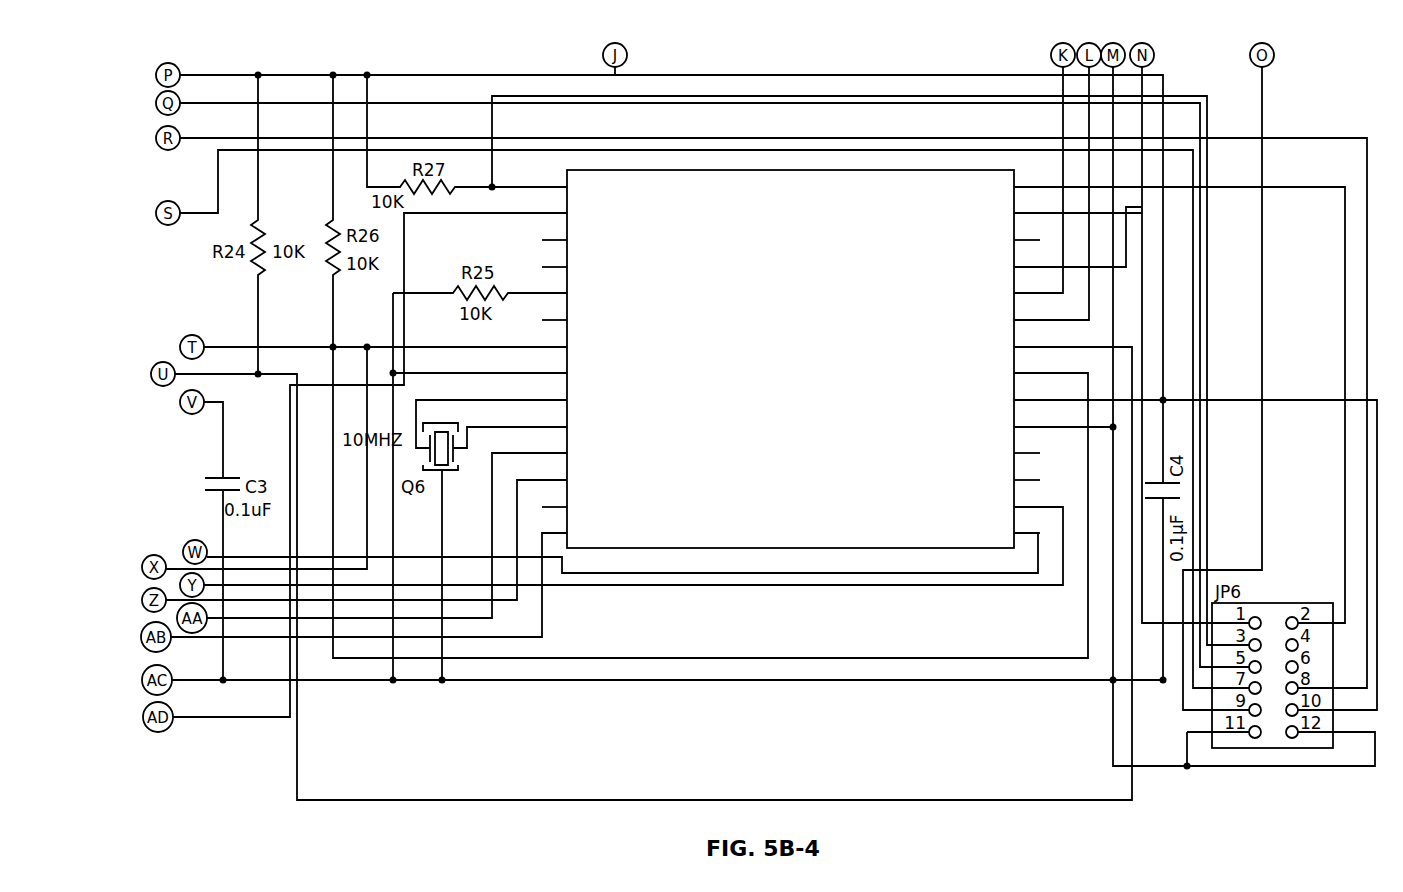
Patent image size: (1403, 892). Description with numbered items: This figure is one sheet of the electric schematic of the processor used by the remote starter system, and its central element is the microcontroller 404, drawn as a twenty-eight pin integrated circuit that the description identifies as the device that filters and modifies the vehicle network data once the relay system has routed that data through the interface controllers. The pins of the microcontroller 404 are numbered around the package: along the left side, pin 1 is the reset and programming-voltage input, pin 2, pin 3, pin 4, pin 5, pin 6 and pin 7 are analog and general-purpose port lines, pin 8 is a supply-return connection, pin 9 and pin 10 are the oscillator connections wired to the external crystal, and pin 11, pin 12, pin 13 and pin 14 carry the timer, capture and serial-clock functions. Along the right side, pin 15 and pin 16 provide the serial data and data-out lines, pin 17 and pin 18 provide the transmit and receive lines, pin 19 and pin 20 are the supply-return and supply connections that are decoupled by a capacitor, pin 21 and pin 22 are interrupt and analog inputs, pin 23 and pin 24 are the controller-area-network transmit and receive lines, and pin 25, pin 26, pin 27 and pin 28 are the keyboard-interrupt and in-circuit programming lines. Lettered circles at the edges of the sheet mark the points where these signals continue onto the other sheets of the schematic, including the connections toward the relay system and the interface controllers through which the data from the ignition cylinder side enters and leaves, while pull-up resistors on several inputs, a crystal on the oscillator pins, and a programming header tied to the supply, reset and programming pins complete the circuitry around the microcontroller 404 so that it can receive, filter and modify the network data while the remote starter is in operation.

The microcontroller 404 is at (790, 343).
The U12 pin 1 RE3/MCLR/VPP 1 is at (554, 178).
The U12 pin 2 RA0/AN0 2 is at (554, 204).
The U12 pin 3 RA1/AN1 3 is at (554, 231).
The U12 pin 4 RA2/AN2/VREF- 4 is at (554, 258).
The U12 pin 5 RA3/AN3/VREF+ 5 is at (554, 284).
The U12 pin 6 RA4/T0CKI 6 is at (554, 311).
The U12 pin 7 RA5/AN4/SS/HLVDIN 7 is at (554, 338).
The U12 pin 8 VSS 8 is at (554, 364).
The U12 pin 9 RA7/CLKI/OSC1 9 is at (554, 391).
The U12 pin 10 RA6/CLKO/OSC2 10 is at (553, 418).
The U12 pin 11 RC0/T1OSO/T13CKI 11 is at (553, 444).
The U12 pin 12 RC1/T1OSI 12 is at (553, 471).
The U12 pin 13 RC2/CCP1 13 is at (553, 498).
The U12 pin 14 RC3/SCK/SCL 14 is at (553, 524).
The U12 pin 15 RC4/SDI/SDA 15 is at (1027, 524).
The U12 pin 16 RC5/SDO 16 is at (1027, 498).
The U12 pin 17 RC6/TX/CK 17 is at (1027, 471).
The U12 pin 18 RC7/RX/DT 18 is at (1027, 444).
The U12 pin 19 VSS 19 is at (1027, 418).
The U12 pin 20 VDD 20 is at (1027, 391).
The U12 pin 21 INT0/AN10/RB0 21 is at (1027, 364).
The U12 pin 22 INT1/AN8/RB1 22 is at (1027, 338).
The U12 pin 23 INT2/CANTX/RB2 23 is at (1027, 311).
The U12 pin 24 CANRX/RB3 24 is at (1027, 284).
The U12 pin 25 KBI0/AN9/RB4 25 is at (1027, 258).
The U12 pin 26 KBI1/PGM/RB5 26 is at (1027, 231).
The U12 pin 27 KBI2/PGC/RB6 27 is at (1027, 204).
The U12 pin 28 KBI3/PGD/RB7 28 is at (1027, 178).